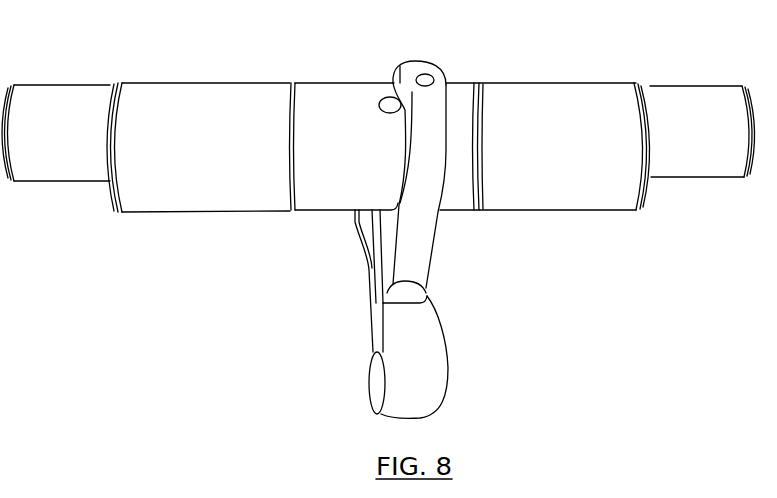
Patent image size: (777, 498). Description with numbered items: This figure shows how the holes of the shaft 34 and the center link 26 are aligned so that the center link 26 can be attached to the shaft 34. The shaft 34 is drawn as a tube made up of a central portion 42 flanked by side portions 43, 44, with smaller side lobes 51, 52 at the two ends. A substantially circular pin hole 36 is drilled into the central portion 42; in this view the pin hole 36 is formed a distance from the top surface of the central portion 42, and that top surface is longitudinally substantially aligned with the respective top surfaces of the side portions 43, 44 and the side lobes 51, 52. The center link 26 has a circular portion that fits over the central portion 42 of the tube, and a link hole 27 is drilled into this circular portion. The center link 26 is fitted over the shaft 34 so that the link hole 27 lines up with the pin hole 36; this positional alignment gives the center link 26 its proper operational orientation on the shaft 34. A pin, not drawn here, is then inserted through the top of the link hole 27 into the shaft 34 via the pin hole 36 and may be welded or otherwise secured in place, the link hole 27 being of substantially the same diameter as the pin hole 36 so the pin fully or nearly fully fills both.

The center link 26 is at (369, 388).
The link hole 27 is at (425, 80).
The shaft 34 is at (118, 277).
The pin hole 36 is at (382, 100).
The central portion 42 is at (325, 197).
The side portion 43 is at (198, 100).
The side portion 44 is at (572, 90).
The side lobe 51 is at (65, 93).
The side lobe 52 is at (690, 95).